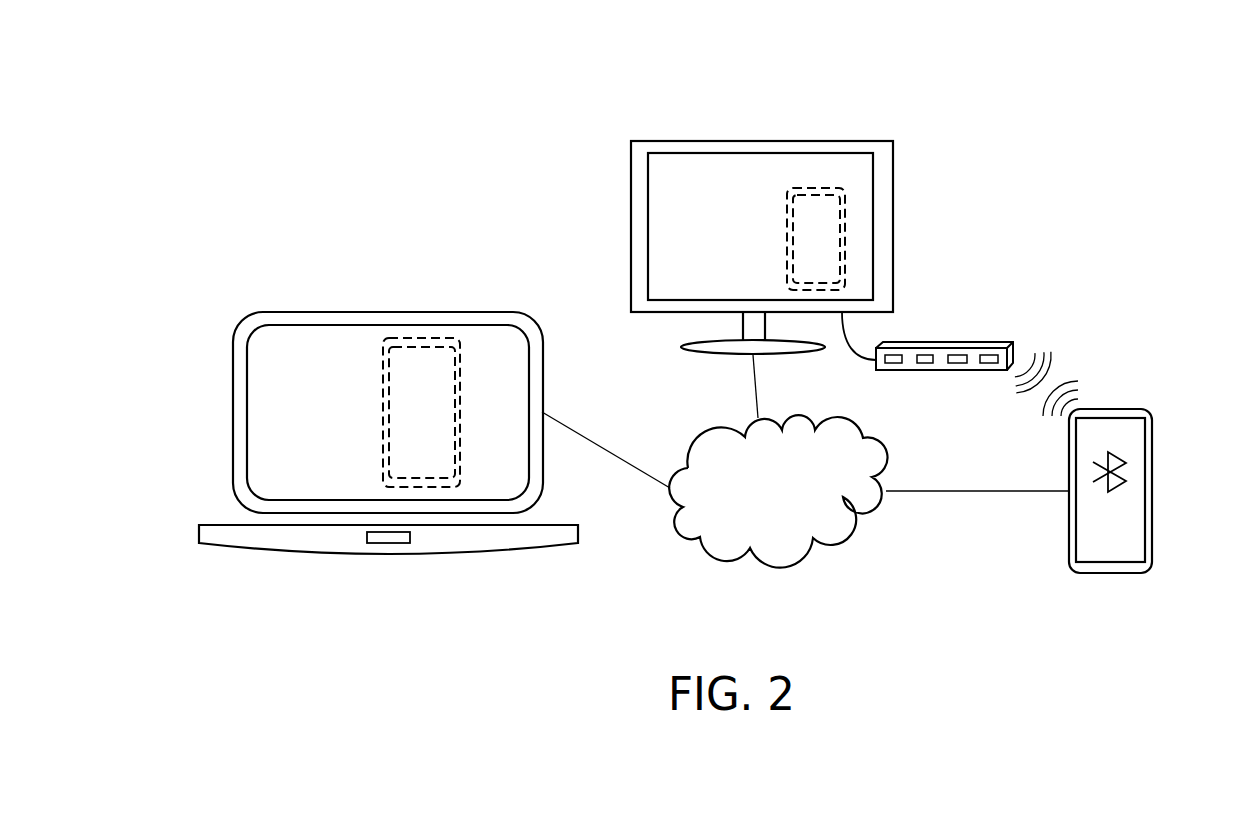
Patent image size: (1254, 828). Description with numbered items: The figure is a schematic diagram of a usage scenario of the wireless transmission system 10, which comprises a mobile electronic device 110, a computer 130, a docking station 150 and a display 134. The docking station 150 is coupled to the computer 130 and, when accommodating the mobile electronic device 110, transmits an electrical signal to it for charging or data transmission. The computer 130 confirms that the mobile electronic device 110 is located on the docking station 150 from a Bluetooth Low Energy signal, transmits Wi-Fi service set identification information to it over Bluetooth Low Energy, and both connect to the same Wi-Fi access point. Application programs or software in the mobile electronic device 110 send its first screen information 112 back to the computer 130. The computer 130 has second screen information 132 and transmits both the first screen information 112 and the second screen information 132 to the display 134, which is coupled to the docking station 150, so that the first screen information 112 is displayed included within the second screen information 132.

The wireless transmission system 10 is at (1238, 55).
The mobile electronic device 110 is at (1140, 409).
The first screen information 112 is at (408, 370).
The computer 130 is at (482, 310).
The second screen information 132 is at (273, 362).
The display 134 is at (893, 170).
The docking station 150 is at (940, 347).